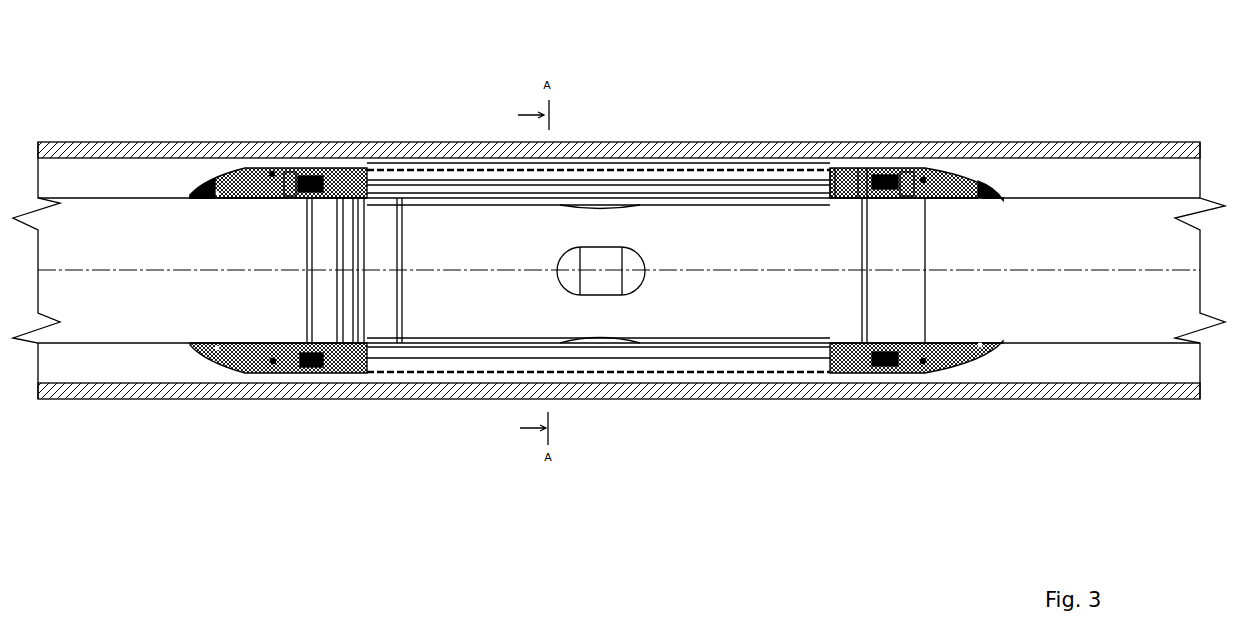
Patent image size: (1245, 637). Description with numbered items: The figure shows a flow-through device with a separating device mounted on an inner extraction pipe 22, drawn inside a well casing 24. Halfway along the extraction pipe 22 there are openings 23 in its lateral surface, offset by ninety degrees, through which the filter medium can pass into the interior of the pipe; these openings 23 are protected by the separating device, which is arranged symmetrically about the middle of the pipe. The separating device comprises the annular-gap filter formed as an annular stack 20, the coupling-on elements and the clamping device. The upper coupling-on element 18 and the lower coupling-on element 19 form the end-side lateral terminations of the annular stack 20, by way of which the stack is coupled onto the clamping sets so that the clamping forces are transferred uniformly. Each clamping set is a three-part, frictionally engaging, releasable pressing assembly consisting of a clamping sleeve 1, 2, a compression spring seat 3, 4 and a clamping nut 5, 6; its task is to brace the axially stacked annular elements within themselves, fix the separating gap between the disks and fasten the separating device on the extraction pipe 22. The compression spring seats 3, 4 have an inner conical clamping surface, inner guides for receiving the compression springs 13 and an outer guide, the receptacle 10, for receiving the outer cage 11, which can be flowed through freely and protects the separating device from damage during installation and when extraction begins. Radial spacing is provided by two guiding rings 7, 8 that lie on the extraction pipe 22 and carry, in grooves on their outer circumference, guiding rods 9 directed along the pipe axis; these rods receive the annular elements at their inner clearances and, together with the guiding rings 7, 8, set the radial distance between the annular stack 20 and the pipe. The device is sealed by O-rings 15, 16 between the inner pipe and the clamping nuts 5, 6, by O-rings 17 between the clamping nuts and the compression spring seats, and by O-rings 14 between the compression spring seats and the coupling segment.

The clamping sleeve 1 is at (272, 174).
The clamping sleeve 2 is at (950, 192).
The compression spring seat 3 is at (291, 178).
The compression spring seat 4 is at (915, 178).
The clamping nut 5 is at (208, 192).
The clamping nut 6 is at (967, 187).
The guiding ring 7 is at (345, 175).
The guiding ring 8 is at (840, 170).
The guiding rod 9 is at (676, 192).
The receptacle for outer cage 10 is at (353, 172).
The outer cage 11 is at (693, 164).
The compression spring 13 is at (311, 173).
The O-ring 14 is at (333, 178).
The O-ring 15 is at (203, 348).
The O-ring 16 is at (993, 343).
The O-ring 17 is at (273, 361).
The upper coupling-on element 18 is at (345, 358).
The lower coupling-on element 19 is at (858, 356).
The annular stack 20 is at (362, 366).
The extraction pipe 22 is at (714, 341).
The opening 23 is at (597, 280).
The well casing 24 is at (466, 142).